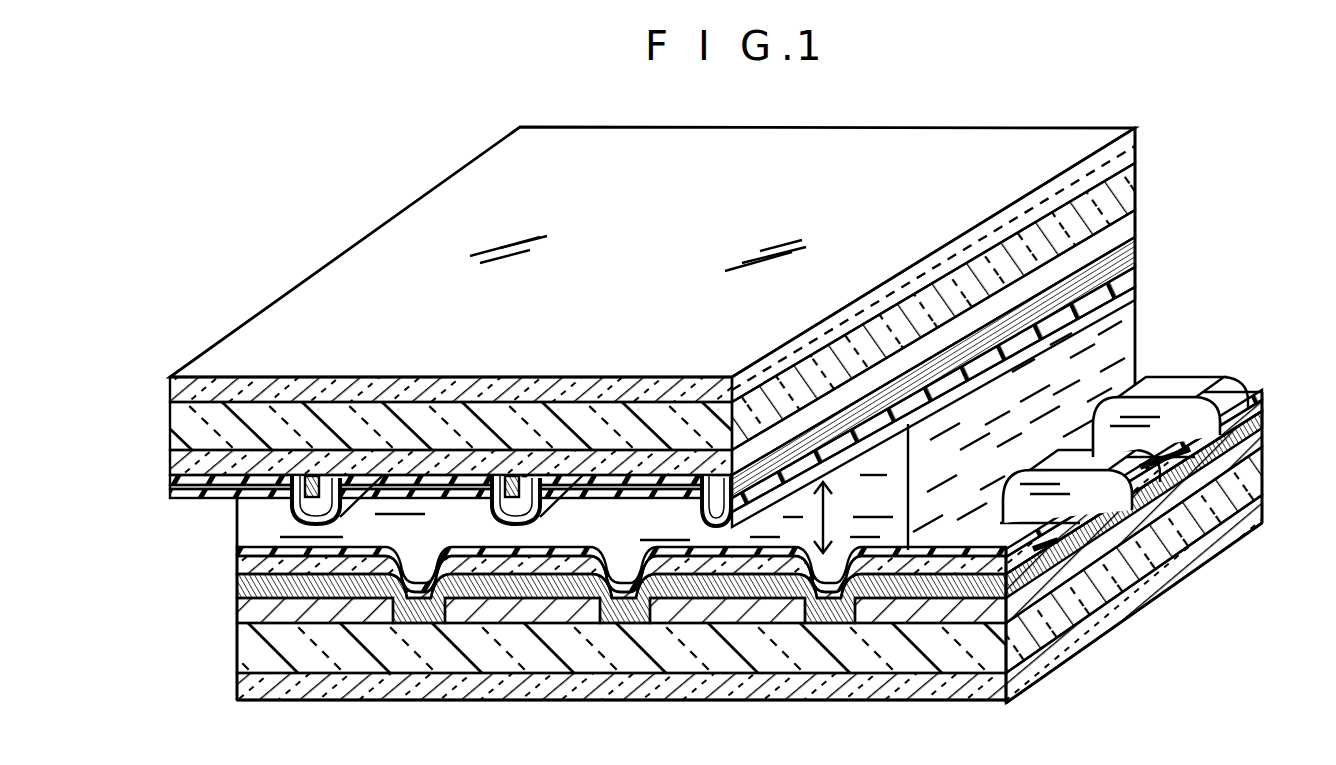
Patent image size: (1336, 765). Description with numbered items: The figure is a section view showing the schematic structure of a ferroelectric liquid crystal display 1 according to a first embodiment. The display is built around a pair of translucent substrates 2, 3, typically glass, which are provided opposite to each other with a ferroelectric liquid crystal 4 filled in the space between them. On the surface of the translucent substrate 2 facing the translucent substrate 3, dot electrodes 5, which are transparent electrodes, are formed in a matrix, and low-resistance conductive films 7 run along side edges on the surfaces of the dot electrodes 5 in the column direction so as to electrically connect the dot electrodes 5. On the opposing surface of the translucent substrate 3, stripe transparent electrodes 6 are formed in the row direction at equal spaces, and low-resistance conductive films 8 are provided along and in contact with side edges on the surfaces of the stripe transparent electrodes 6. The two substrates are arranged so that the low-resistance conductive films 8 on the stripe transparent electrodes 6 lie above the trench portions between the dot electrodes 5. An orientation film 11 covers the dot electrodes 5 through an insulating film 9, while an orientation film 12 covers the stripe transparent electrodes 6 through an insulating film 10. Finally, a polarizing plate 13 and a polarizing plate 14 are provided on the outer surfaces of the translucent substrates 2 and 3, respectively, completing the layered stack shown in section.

The ferroelectric liquid crystal display 1 is at (278, 268).
The translucent substrate 2 is at (1265, 478).
The translucent substrate 3 is at (1137, 170).
The ferroelectric liquid crystal 4 is at (1125, 332).
The dot electrodes 5 is at (1265, 445).
The stripe transparent electrodes 6 is at (1137, 215).
The low-resistance conductive films 7 is at (237, 591).
The low-resistance conductive films 8 is at (1137, 250).
The insulating film 9 is at (1265, 410).
The insulating film 10 is at (1137, 283).
The orientation film 11 is at (1265, 385).
The orientation film 12 is at (1137, 305).
The polarizing plate 13 is at (1265, 512).
The polarizing plate 14 is at (1137, 131).